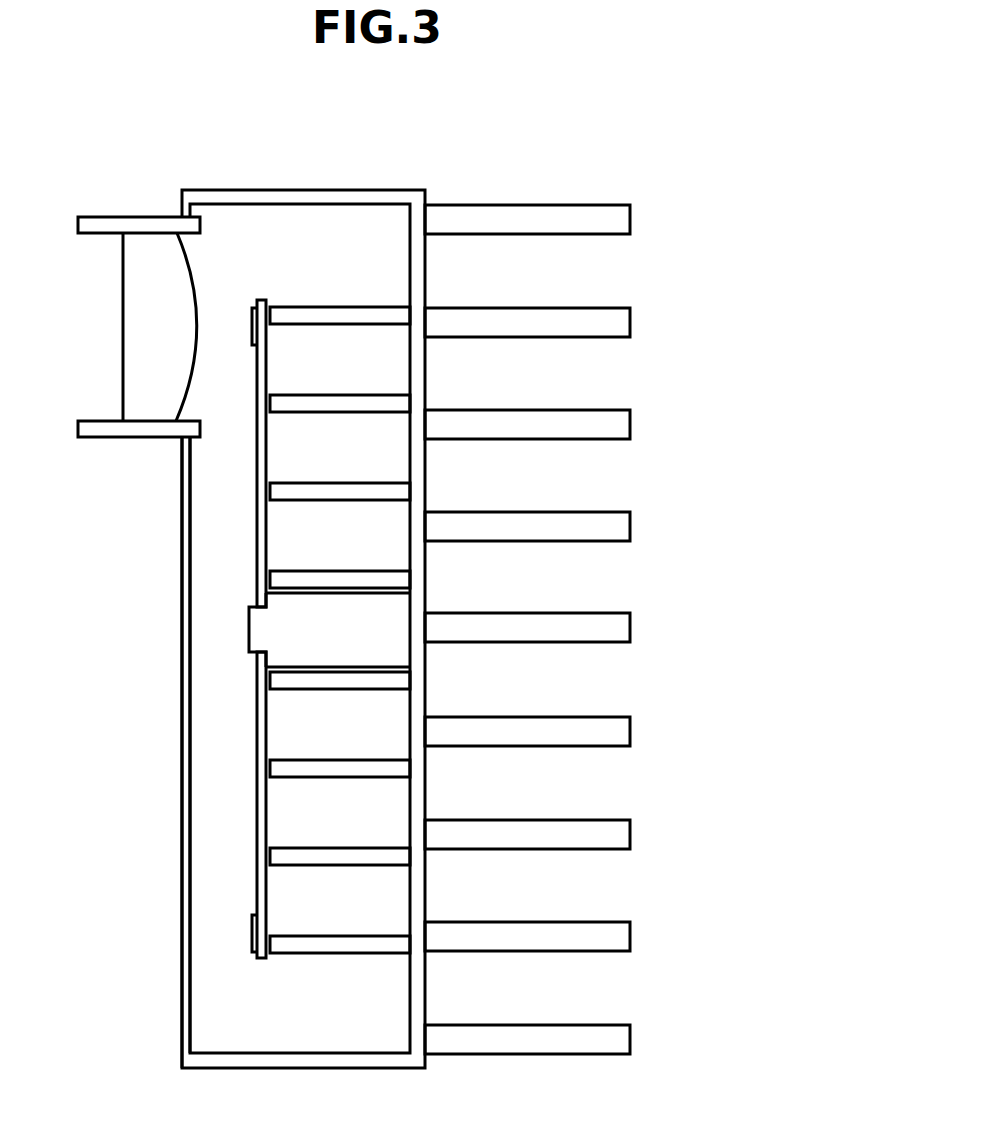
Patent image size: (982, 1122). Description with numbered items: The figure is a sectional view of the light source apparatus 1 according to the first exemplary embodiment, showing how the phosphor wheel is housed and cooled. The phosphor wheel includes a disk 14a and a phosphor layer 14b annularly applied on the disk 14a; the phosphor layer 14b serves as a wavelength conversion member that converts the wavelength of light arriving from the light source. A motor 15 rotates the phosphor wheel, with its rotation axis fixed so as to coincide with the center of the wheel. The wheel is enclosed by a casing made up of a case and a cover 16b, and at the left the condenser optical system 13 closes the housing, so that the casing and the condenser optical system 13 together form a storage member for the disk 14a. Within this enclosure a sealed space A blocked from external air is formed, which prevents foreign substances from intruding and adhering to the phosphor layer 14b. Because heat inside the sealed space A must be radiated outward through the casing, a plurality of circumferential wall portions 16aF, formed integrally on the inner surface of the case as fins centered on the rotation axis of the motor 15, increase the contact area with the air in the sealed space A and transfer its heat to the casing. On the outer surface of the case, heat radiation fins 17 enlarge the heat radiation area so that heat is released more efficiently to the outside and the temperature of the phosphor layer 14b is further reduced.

The light source apparatus 1 is at (680, 126).
The condenser optical system 13 is at (132, 322).
The disk 14a is at (257, 713).
The phosphor layer 14b is at (253, 937).
The motor 15 is at (390, 612).
The wall portions 16aF is at (340, 317).
The cover 16b is at (182, 533).
The heat radiation fin 17 is at (622, 423).
The sealed space A is at (239, 264).